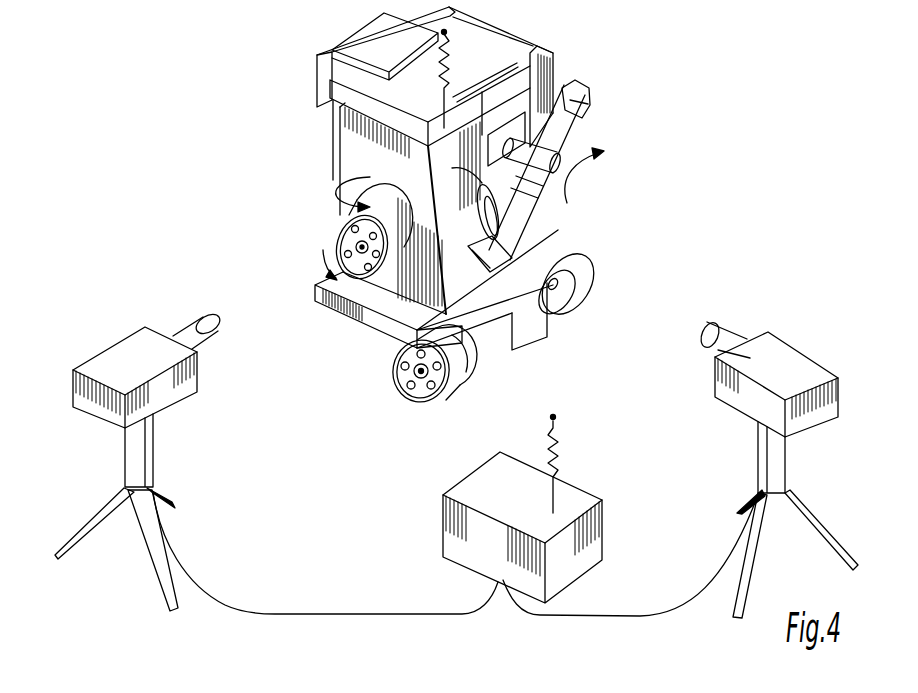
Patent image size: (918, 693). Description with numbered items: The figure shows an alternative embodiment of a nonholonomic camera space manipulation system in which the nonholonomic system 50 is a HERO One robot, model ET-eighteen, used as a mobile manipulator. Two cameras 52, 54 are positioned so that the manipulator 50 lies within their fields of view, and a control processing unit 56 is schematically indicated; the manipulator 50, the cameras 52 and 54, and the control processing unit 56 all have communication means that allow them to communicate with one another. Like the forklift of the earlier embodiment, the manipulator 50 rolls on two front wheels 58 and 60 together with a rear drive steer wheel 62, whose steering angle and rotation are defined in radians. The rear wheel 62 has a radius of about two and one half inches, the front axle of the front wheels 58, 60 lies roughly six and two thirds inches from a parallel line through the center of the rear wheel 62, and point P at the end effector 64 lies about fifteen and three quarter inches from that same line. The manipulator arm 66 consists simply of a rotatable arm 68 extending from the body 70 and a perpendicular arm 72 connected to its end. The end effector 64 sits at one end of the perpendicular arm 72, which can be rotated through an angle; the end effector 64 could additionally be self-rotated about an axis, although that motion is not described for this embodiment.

The nonholonomic system 50 is at (318, 151).
The camera 52 is at (187, 392).
The camera 54 is at (740, 402).
The control processing unit 56 is at (443, 535).
The front wheel 58 is at (458, 378).
The front wheel 60 is at (592, 262).
The rear drive steer wheel 62 is at (337, 216).
The end effector 64 is at (432, 150).
The manipulator arm 66 is at (548, 172).
The rotatable arm 68 is at (545, 200).
The body 70 is at (472, 52).
The perpendicular arm 72 is at (540, 212).